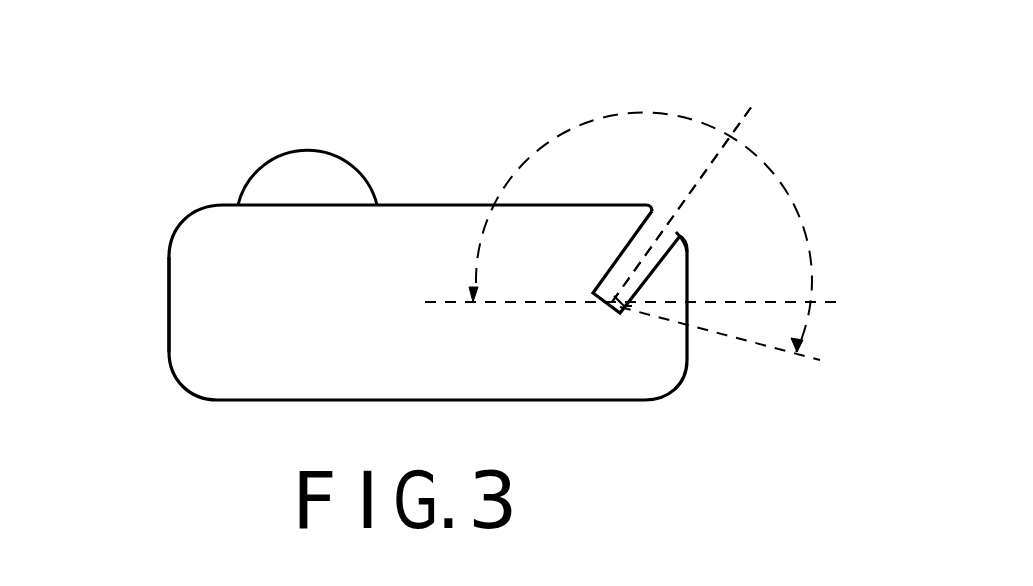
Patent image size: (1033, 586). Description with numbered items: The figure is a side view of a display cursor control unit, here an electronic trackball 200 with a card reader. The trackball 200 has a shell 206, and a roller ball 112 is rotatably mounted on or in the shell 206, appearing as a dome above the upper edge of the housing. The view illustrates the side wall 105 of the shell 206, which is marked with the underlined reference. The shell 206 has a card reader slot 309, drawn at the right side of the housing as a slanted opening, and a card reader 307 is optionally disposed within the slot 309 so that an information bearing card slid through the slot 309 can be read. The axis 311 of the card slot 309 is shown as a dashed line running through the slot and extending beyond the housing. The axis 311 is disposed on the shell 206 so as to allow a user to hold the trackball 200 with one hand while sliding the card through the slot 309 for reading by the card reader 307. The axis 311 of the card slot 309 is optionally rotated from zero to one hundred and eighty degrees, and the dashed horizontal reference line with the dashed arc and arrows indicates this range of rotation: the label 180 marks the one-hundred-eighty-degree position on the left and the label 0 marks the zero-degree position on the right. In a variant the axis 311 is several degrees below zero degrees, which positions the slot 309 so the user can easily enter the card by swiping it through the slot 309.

The side wall 105 is at (284, 325).
The roller ball 112 is at (276, 170).
The 180 degree position 180 is at (350, 288).
The electronic trackball 200 is at (687, 360).
The shell 206 is at (171, 377).
The card reader 307 is at (657, 220).
The card reader slot 309 is at (678, 233).
The axis 311 is at (759, 95).
The 0 degree position 0 is at (745, 319).